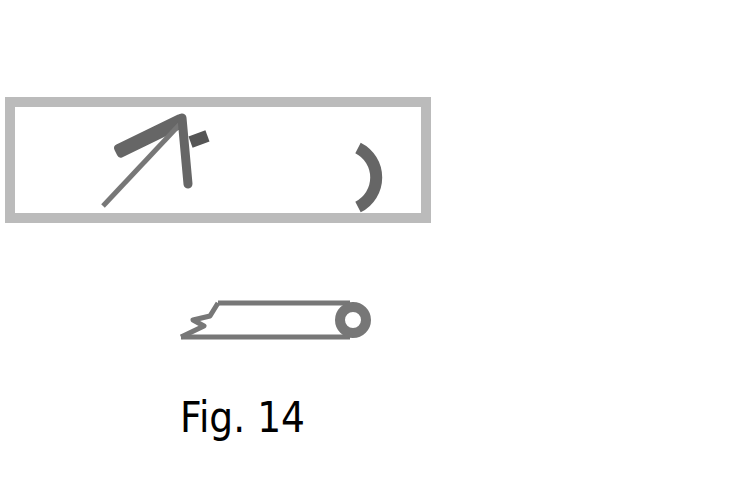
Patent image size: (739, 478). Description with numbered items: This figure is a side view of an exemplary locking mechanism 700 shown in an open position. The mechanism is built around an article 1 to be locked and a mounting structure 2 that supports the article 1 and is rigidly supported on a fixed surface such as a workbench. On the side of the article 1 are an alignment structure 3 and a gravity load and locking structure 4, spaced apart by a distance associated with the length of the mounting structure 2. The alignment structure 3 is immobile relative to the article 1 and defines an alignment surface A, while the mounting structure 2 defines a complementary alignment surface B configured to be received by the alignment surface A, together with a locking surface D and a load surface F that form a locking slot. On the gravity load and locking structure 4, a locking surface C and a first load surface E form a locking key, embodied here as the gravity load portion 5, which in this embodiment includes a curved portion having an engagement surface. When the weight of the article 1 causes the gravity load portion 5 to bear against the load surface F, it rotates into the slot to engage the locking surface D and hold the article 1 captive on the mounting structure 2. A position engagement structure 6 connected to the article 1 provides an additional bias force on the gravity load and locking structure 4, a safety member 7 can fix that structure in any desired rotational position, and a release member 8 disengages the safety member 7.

The article 1 is at (283, 100).
The mounting structure 2 is at (319, 282).
The alignment structure 3 is at (377, 152).
The gravity load and locking structure 4 is at (190, 182).
The gravity load portion 5 is at (200, 137).
The position engagement structure 6 is at (174, 120).
The safety member 7 is at (130, 147).
The release member 8 is at (105, 205).
The alignment surface A is at (376, 197).
The alignment surface B is at (371, 318).
The locking surface C is at (181, 184).
The locking surface D is at (212, 319).
The first load surface E is at (187, 186).
The load surface F is at (191, 321).
The locking mechanism 700 is at (476, 282).